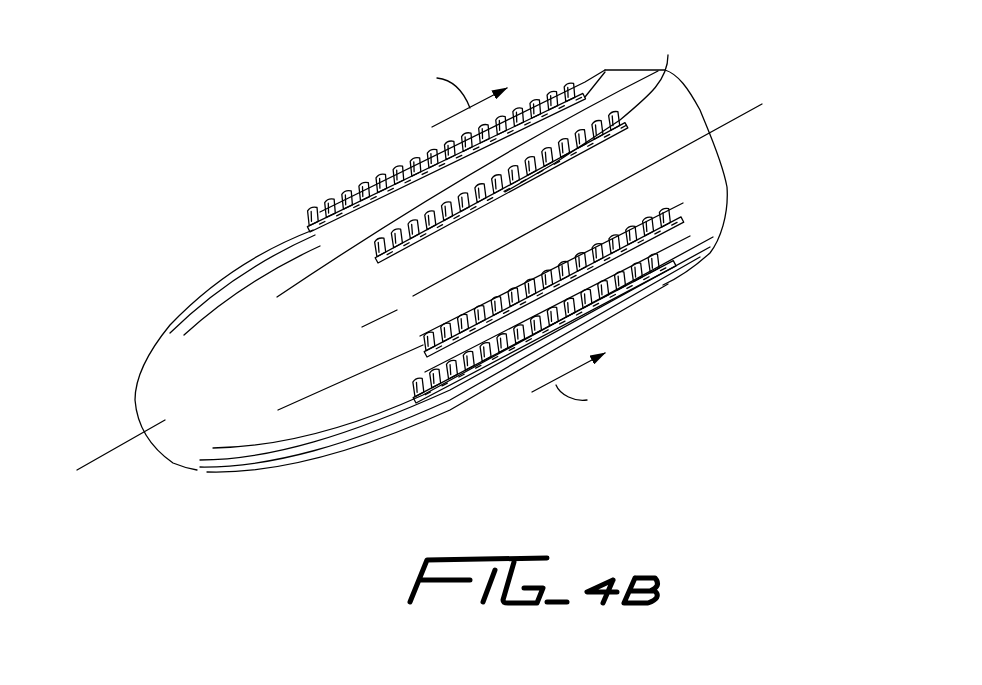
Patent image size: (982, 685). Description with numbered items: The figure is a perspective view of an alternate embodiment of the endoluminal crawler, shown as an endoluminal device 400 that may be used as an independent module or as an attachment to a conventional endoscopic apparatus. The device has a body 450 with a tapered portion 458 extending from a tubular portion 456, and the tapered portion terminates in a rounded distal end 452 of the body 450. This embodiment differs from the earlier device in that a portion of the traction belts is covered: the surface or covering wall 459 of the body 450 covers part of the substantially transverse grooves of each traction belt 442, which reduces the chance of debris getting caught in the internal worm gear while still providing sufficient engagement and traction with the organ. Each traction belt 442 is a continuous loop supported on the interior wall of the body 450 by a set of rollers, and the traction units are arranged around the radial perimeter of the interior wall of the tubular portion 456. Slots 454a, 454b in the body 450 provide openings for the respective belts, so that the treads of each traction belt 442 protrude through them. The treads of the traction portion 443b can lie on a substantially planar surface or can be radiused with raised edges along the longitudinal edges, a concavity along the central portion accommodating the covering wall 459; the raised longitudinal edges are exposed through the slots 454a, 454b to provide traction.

The endoluminal device 400 is at (713, 63).
The traction belt 442 is at (541, 100).
The traction portion 443b is at (369, 196).
The body 450 is at (688, 183).
The rounded distal nose 452 is at (188, 433).
The slot 454a is at (583, 100).
The slot 454b is at (663, 270).
The tubular portion 456 is at (345, 278).
The tapered portion 458 is at (188, 383).
The covering wall 459 is at (425, 193).